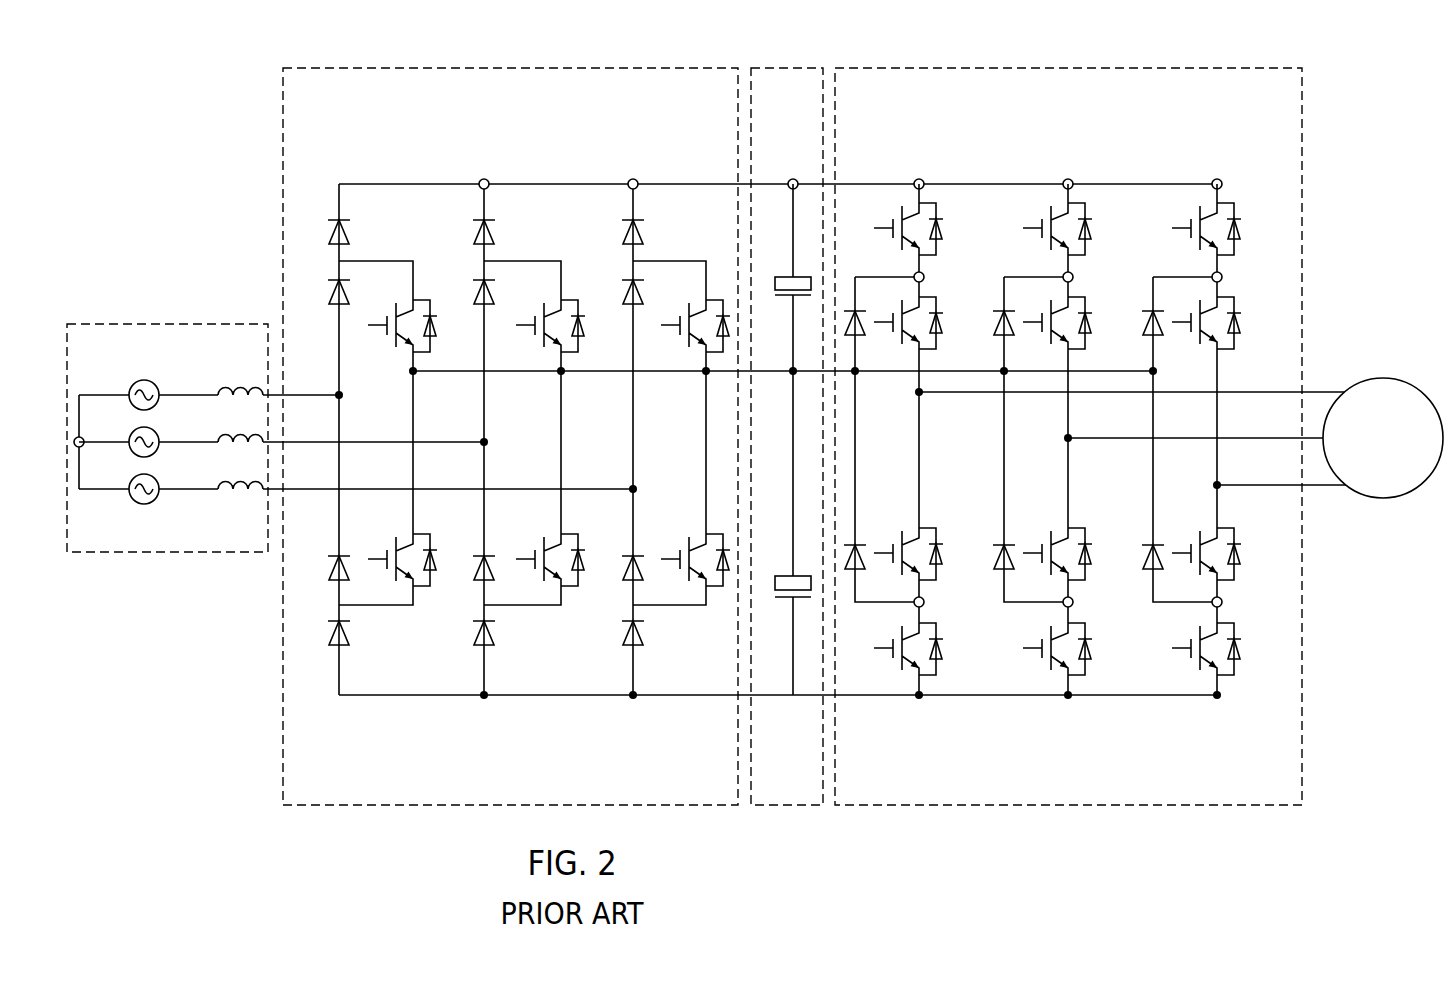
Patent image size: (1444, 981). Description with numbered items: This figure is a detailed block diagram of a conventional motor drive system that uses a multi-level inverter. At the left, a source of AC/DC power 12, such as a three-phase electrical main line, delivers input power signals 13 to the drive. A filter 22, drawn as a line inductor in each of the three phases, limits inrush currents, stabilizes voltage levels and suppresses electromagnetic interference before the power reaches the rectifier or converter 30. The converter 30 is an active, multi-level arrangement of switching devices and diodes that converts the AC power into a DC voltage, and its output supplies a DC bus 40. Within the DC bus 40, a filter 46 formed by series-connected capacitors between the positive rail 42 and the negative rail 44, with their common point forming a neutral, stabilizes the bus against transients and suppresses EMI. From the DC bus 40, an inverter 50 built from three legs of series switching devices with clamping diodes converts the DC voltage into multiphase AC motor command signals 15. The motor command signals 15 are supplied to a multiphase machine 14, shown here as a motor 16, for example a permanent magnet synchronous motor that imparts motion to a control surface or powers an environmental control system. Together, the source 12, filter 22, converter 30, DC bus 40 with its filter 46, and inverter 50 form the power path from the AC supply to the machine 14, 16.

The source of AC/DC power 12 is at (133, 324).
The input power signals 13 is at (202, 376).
The filter 22 is at (233, 506).
The converter 30 is at (730, 703).
The DC bus 40 is at (776, 779).
The positive DC rail N1 42 is at (812, 184).
The negative DC rail N2 44 is at (774, 697).
The filter 46 is at (791, 297).
The inverter 50 is at (1242, 703).
The multiphase machine 14 is at (1383, 406).
The motor 16 is at (1378, 378).
The motor command signals 15 is at (1319, 512).